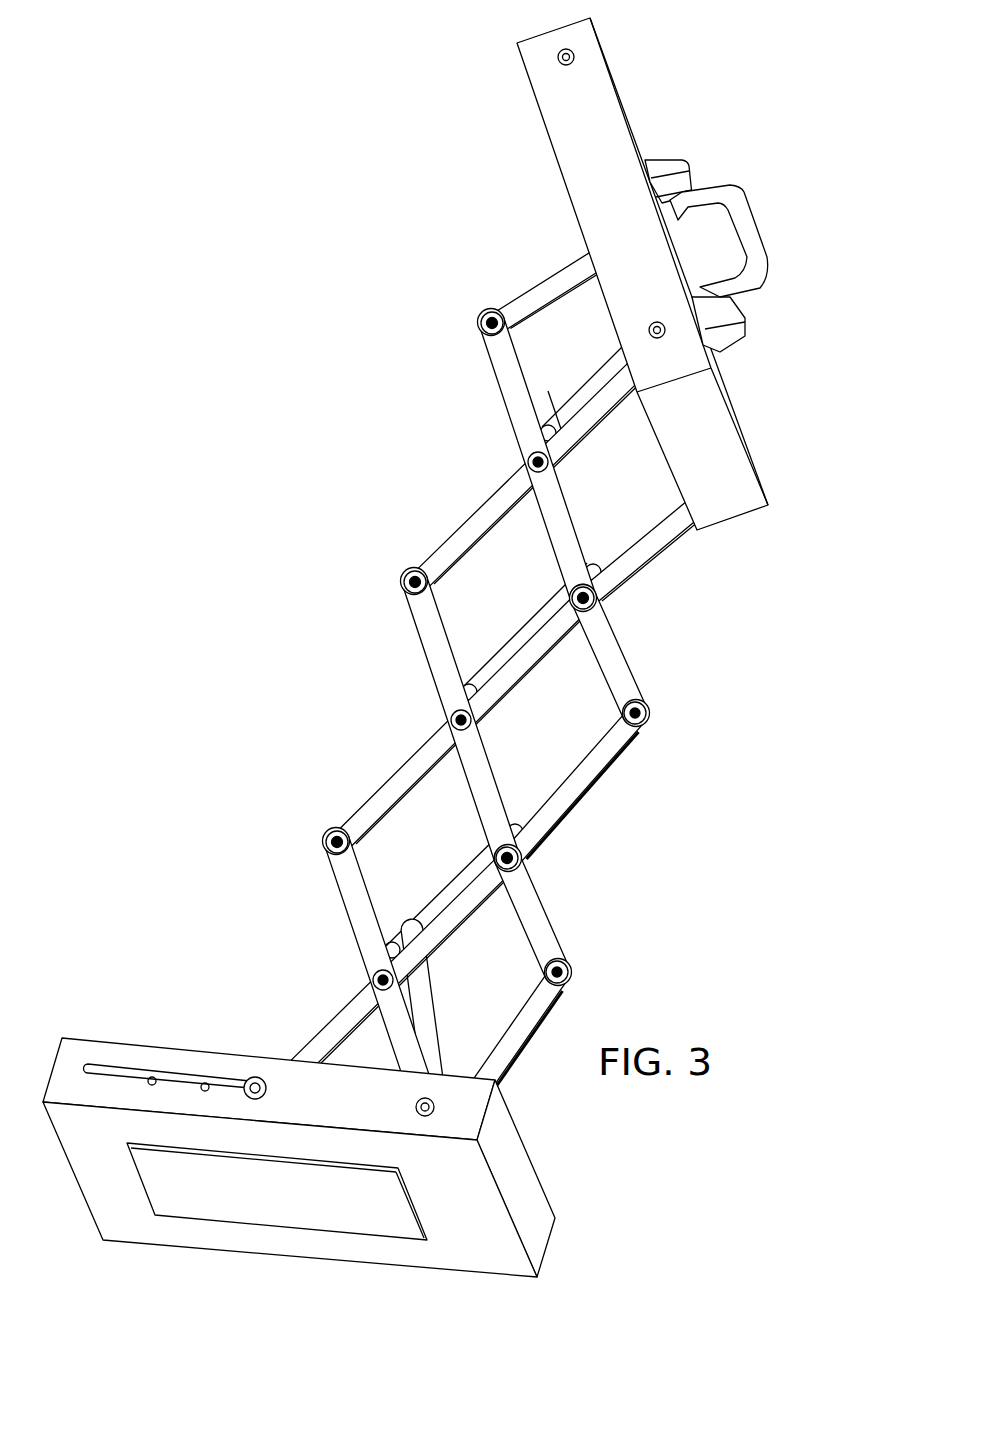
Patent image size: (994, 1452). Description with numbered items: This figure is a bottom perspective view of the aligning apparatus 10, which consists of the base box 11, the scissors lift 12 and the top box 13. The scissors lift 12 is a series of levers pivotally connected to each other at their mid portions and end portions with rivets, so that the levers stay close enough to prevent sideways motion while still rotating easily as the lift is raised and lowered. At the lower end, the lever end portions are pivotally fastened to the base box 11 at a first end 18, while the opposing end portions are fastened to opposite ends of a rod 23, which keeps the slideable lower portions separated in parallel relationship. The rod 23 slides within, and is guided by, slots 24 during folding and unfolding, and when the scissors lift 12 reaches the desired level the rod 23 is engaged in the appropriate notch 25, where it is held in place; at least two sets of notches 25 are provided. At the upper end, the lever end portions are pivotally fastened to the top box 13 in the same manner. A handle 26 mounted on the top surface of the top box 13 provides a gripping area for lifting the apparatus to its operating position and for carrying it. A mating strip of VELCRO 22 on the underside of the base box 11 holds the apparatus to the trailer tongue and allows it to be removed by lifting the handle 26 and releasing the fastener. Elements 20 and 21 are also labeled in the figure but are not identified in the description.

The aligning apparatus 10 is at (238, 727).
The base box 11 is at (393, 1099).
The scissors lift 12 is at (640, 790).
The top box 13 is at (518, 180).
The first end 18 is at (517, 1170).
The top surface of base 20 is at (293, 1090).
The front face of base 21 is at (472, 1205).
The VELCRO strip 22 is at (353, 1222).
The rod 23 is at (245, 1080).
The slots 24 is at (153, 1077).
The notches 25 is at (177, 1072).
The handle 26 is at (753, 222).